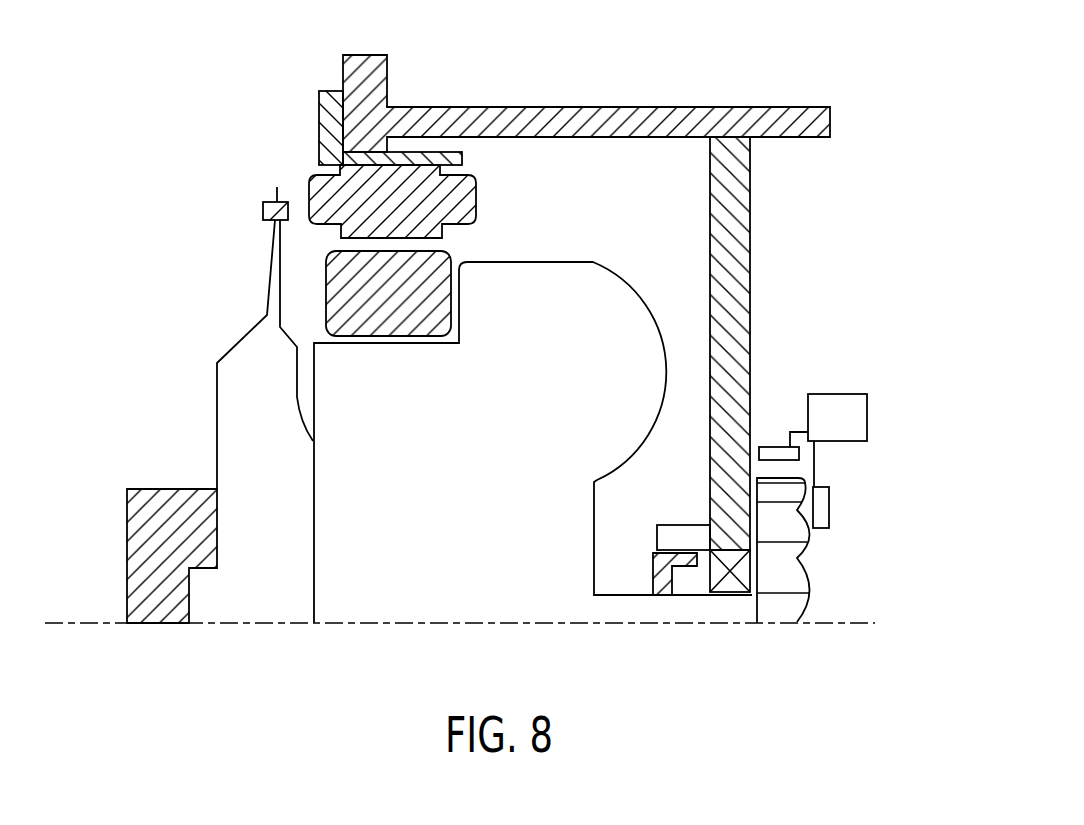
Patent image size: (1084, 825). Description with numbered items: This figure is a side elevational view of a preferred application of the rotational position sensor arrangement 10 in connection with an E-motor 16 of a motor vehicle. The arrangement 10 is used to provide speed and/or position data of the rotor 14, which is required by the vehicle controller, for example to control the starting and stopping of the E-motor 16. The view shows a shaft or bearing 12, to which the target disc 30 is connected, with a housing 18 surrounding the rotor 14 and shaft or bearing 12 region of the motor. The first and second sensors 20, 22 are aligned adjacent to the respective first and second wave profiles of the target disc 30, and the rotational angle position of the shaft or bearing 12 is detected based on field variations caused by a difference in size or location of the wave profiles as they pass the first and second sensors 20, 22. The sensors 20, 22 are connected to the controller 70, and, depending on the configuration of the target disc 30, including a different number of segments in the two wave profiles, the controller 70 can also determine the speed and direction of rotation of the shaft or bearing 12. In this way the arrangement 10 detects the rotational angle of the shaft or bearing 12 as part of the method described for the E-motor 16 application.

The rotational position sensor arrangement 10 is at (503, 339).
The shaft or bearing 12 is at (708, 550).
The rotor 14 is at (409, 322).
The E-motor 16 is at (513, 215).
The housing 18 is at (593, 262).
The first sensor 20 is at (824, 493).
The second sensor 22 is at (786, 447).
The target disc 30 is at (805, 550).
The controller 70 is at (855, 422).